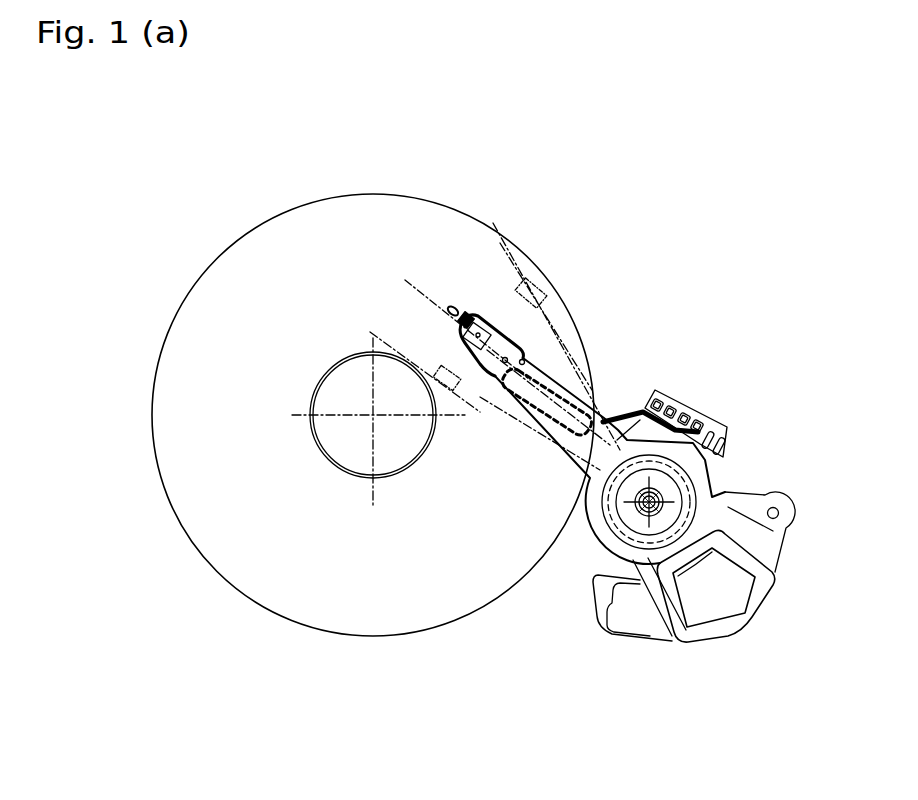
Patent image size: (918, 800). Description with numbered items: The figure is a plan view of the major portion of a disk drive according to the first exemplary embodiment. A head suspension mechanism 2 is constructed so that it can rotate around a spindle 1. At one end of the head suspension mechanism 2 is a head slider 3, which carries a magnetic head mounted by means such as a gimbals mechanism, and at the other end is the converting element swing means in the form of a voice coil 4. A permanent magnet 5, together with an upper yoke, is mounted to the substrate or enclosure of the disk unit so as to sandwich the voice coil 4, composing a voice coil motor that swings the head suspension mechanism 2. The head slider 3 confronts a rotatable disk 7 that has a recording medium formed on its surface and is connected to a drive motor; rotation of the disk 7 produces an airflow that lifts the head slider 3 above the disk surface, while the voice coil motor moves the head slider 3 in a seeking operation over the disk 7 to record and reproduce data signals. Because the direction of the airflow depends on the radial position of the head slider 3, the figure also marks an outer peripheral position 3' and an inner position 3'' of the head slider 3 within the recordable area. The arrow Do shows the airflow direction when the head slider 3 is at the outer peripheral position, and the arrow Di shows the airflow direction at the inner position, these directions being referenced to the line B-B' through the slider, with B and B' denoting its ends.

The spindle 1 is at (660, 488).
The head suspension mechanism 2 is at (614, 407).
The head slider 3 is at (467, 254).
The head slider position at outer peripheral portion 3' is at (577, 264).
The head slider position at inner portion 3'' is at (605, 302).
The voice coil 4 is at (698, 630).
The permanent magnet 5 is at (633, 618).
The disk 7 is at (403, 227).
The line B-B' B is at (491, 349).
The line B- B' is at (746, 588).
The arrow Di is at (436, 368).
The arrow Do is at (524, 280).